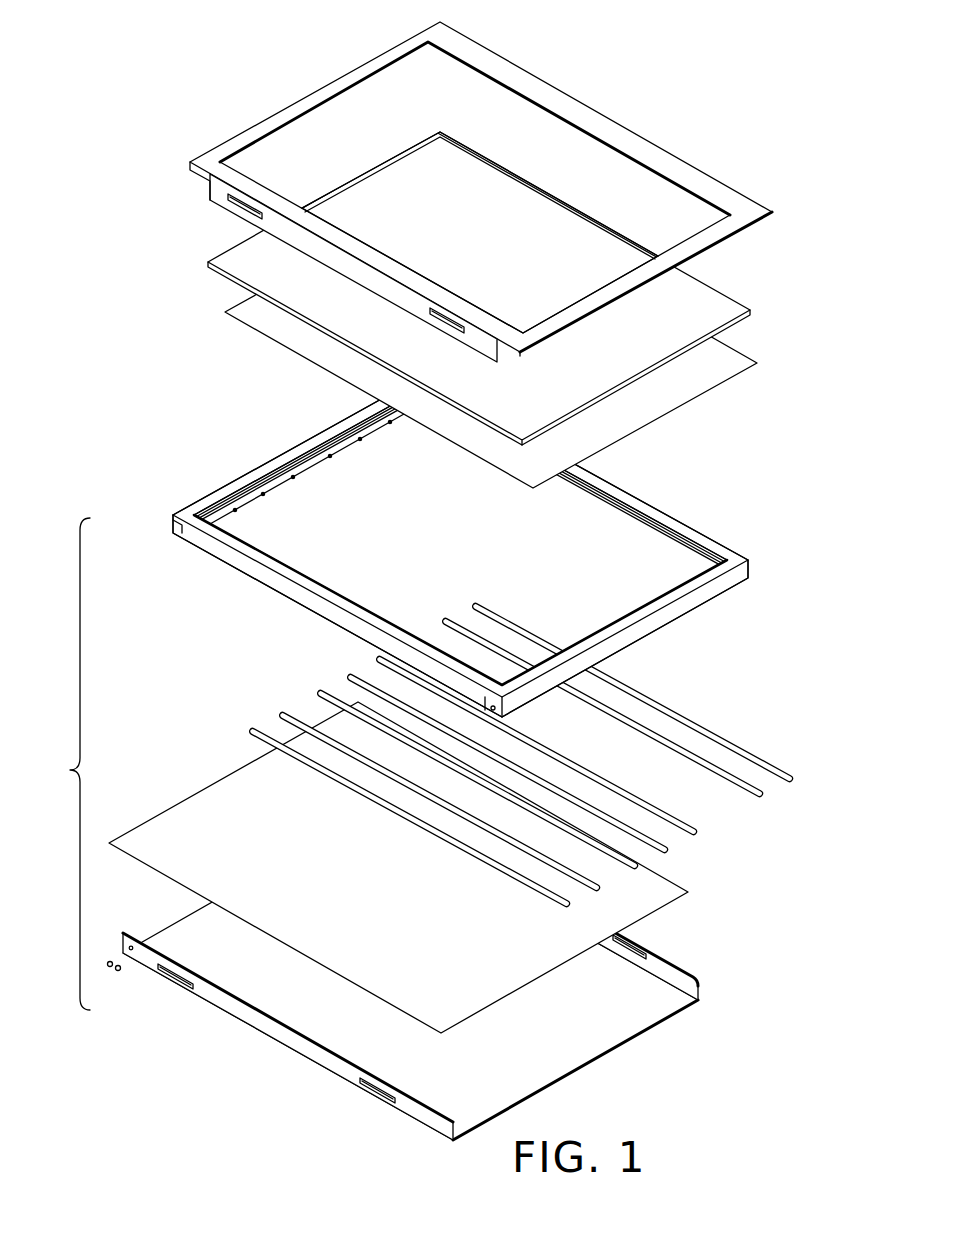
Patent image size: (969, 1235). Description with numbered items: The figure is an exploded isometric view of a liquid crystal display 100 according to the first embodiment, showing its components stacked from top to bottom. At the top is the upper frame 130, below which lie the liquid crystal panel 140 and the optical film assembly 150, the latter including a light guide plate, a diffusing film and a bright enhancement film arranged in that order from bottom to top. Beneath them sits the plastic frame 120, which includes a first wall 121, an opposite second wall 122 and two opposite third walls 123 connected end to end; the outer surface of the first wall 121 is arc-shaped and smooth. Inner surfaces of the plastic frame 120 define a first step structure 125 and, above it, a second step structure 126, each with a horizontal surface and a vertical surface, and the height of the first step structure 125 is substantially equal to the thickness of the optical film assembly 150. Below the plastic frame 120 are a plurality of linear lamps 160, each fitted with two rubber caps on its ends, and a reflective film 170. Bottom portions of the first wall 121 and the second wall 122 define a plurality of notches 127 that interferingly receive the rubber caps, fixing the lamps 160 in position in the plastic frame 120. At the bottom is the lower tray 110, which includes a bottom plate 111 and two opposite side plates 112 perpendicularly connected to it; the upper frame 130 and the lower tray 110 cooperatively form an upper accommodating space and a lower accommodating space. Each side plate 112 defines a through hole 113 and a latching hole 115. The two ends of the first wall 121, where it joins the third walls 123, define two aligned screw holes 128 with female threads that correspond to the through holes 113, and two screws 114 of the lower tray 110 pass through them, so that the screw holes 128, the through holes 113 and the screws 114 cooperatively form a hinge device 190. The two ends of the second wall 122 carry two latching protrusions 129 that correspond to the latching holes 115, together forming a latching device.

The liquid crystal display 100 is at (412, 588).
The lower tray 110 is at (434, 973).
The bottom plate 111 is at (698, 1012).
The side plates 112 is at (452, 973).
The through hole 113 is at (130, 950).
The screws 114 is at (112, 967).
The latching hole 115 is at (447, 1128).
The plastic frame 120 is at (432, 547).
The first wall 121 is at (303, 443).
The second wall 122 is at (720, 583).
The third walls 123 is at (687, 528).
The first step structure 125 is at (605, 492).
The second step structure 126 is at (620, 500).
The notches 127 is at (292, 477).
The screw holes 128 is at (173, 527).
The latching protrusions 129 is at (493, 707).
The upper frame 130 is at (585, 115).
The liquid crystal panel 140 is at (697, 284).
The optical film assembly 150 is at (722, 357).
The linear lamps 160 is at (627, 688).
The reflective film 170 is at (662, 893).
The hinge device 190 is at (55, 764).